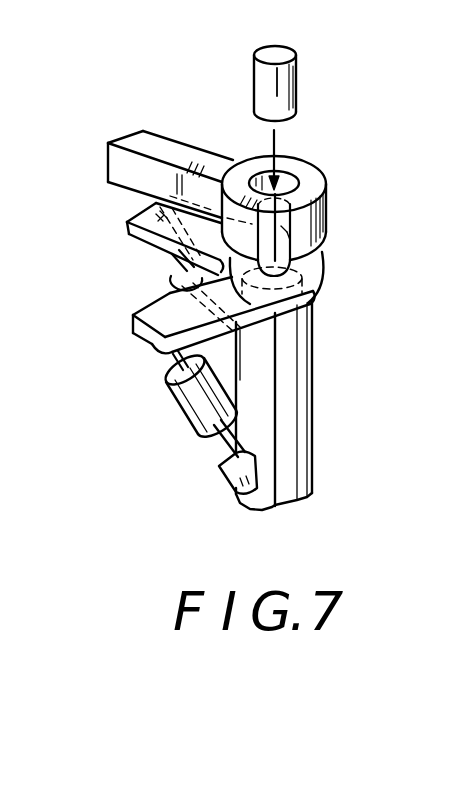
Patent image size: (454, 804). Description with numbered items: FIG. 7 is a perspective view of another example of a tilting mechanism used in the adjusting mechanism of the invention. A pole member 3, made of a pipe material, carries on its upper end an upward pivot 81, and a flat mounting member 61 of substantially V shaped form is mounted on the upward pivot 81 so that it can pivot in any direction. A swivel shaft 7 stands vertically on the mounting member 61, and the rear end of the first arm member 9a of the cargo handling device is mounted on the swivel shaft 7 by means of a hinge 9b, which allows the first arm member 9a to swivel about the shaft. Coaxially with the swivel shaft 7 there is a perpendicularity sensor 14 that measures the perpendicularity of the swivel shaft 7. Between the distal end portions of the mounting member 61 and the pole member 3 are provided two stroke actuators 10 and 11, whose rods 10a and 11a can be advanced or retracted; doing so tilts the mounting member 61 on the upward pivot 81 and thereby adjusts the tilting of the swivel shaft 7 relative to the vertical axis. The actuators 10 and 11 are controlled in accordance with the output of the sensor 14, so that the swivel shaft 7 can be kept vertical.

The pole member 3 is at (289, 453).
The swivel shaft 7 is at (320, 218).
The first arm member 9a is at (171, 152).
The hinge 9b is at (321, 196).
The stroke actuator 10 is at (170, 278).
The rod 10a is at (123, 232).
The stroke actuator 11 is at (181, 427).
The rod 11a is at (157, 348).
The perpendicularity sensor 14 is at (301, 94).
The flat mounting member 61 is at (324, 300).
The upward pivot 81 is at (320, 265).